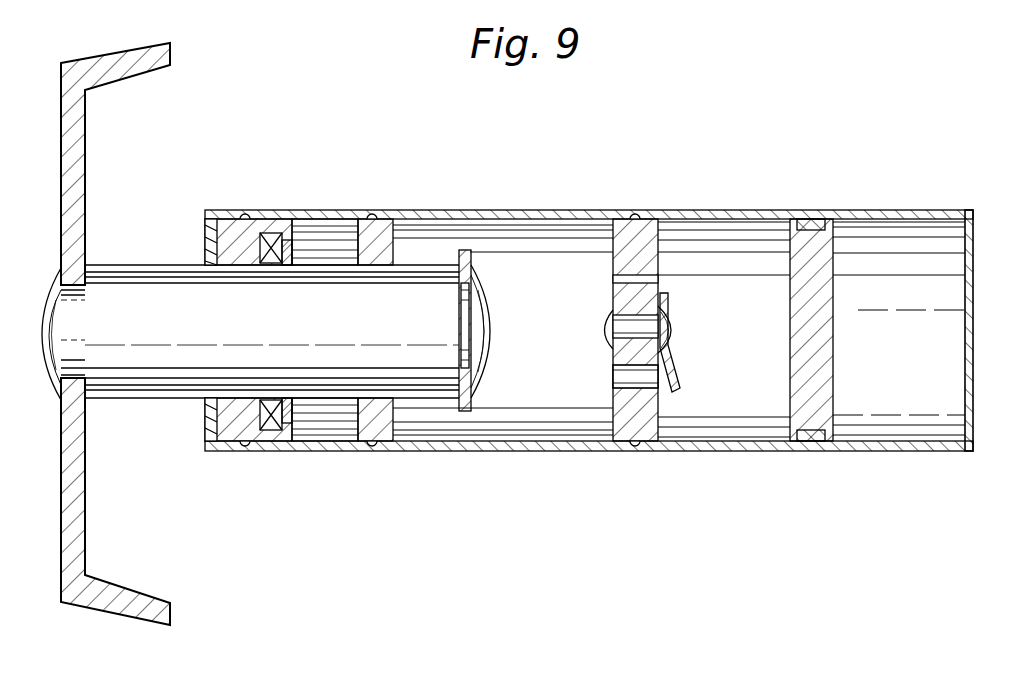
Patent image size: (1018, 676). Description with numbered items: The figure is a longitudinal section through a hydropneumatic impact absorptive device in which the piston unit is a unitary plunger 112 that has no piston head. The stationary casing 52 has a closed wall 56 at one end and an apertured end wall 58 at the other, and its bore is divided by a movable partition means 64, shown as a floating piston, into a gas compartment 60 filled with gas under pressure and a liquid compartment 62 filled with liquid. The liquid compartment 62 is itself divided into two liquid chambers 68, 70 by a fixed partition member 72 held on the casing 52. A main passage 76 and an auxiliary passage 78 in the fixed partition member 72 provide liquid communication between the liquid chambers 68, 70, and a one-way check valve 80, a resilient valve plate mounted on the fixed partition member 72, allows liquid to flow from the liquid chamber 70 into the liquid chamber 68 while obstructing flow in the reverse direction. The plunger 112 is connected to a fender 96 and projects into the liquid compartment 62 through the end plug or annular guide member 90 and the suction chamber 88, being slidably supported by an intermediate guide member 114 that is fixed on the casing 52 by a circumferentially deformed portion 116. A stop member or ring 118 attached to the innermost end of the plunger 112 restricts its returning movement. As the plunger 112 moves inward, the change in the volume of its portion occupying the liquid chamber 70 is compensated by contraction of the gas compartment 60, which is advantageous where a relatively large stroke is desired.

The stationary casing 52 is at (540, 211).
The closed wall 56 is at (975, 228).
The apertured end wall 58 is at (206, 424).
The gas compartment 60 is at (878, 348).
The liquid compartment 62 is at (527, 355).
The movable partition means 64 is at (836, 263).
The liquid chamber 68 is at (725, 433).
The liquid chamber 70 is at (558, 432).
The fixed partition member 72 is at (662, 246).
The main passage 76 is at (613, 378).
The auxiliary passage 78 is at (663, 283).
The one-way check valve 80 is at (672, 363).
The suction chamber 88 is at (335, 226).
The annular guide member 90 is at (243, 236).
The fender 96 is at (88, 142).
The unitary plunger 112 is at (240, 337).
The intermediate guide member 114 is at (404, 236).
The deformed portion 116 is at (372, 450).
The stop member or ring 118 is at (472, 266).